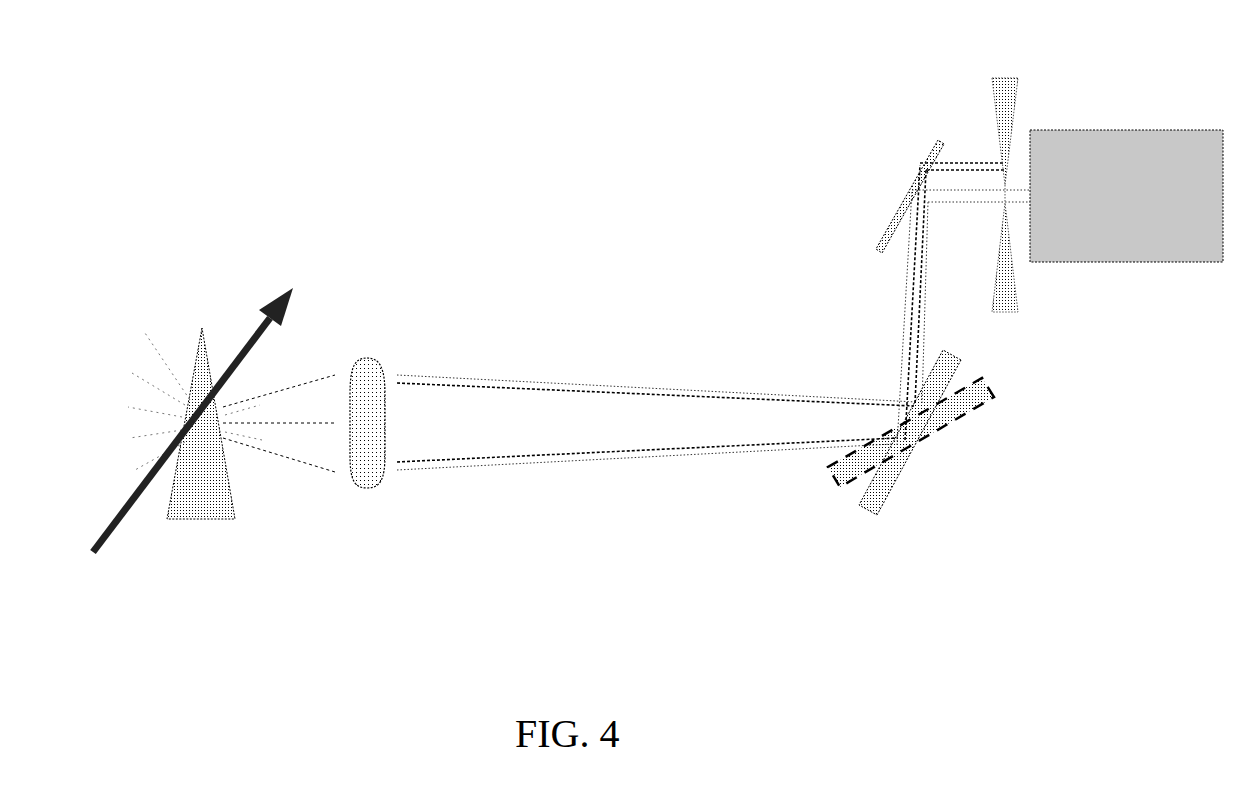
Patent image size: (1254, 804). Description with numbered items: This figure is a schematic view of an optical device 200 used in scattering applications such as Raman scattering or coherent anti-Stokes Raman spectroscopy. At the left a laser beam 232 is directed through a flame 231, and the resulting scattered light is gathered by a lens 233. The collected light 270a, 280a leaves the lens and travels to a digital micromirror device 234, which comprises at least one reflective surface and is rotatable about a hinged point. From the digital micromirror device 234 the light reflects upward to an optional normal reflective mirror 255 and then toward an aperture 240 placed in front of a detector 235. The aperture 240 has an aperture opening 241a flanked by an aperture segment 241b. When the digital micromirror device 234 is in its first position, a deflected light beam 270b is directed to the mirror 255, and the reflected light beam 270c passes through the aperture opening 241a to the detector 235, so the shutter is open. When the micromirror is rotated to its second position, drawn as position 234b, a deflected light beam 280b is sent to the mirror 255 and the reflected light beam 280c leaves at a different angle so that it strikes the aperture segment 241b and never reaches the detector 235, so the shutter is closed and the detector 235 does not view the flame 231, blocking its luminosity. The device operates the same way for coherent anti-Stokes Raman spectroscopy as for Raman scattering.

The optical device 200 is at (593, 142).
The flame 231 is at (202, 323).
The laser beam 232 is at (283, 290).
The lens 233 is at (367, 353).
The digital micromirror device 234 is at (893, 488).
The second position of digital micromirror device 234b is at (975, 418).
The detector 235 is at (1192, 122).
The aperture 240 is at (1041, 50).
The aperture opening 241a is at (1016, 168).
The aperture segment 241b is at (983, 90).
The normal reflective mirror 255 is at (918, 147).
The collected light 270a is at (577, 372).
The deflected light beam 270b is at (895, 340).
The reflected light beam 270c is at (975, 202).
The collected light 280a is at (750, 403).
The deflected light beam 280b is at (923, 302).
The reflected light beam 280c is at (983, 160).